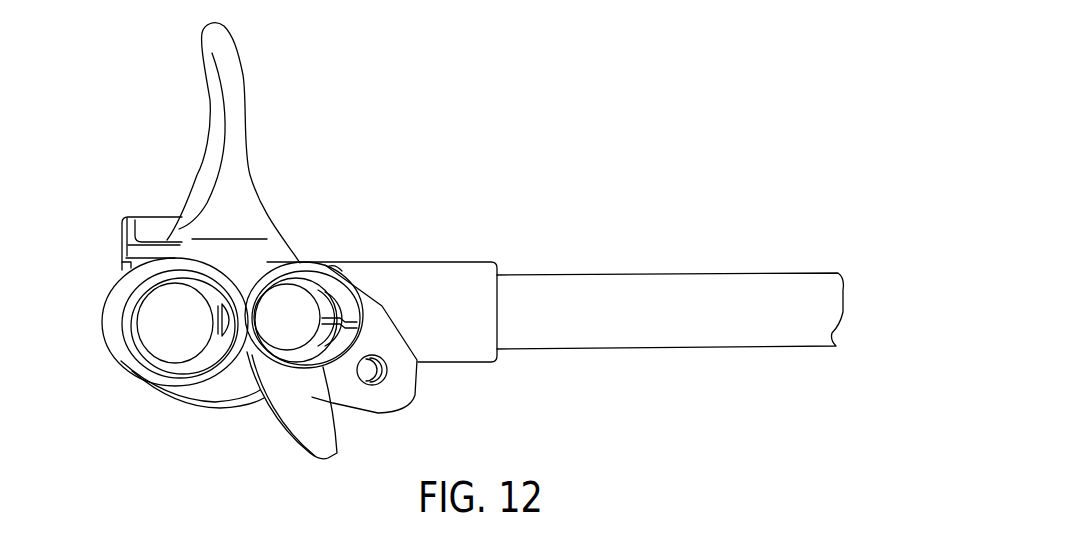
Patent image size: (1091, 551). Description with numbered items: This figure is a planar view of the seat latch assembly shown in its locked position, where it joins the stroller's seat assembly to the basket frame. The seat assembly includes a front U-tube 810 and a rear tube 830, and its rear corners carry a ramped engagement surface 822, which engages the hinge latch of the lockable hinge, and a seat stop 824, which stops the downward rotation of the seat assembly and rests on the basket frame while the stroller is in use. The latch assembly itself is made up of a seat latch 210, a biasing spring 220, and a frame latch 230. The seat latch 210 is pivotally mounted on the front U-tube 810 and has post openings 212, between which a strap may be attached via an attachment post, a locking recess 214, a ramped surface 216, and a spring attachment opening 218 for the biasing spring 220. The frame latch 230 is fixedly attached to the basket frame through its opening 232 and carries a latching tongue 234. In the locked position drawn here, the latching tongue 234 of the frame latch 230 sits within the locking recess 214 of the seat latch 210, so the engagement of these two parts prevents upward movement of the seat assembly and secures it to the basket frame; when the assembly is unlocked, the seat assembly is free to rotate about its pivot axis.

The front U-tube 810 is at (247, 110).
The ramped engagement surface 822 is at (135, 227).
The seat stop 824 is at (120, 262).
The frame latch 230 is at (101, 318).
The opening 232 is at (143, 347).
The latching tongue 234 is at (243, 408).
The locking recess 214 is at (267, 413).
The ramped surface 216 is at (299, 447).
The seat latch 210 is at (413, 397).
The post openings 212 is at (389, 372).
The biasing spring 220 is at (307, 278).
The spring attachment opening 218 is at (366, 304).
The rear tube 830 is at (578, 273).